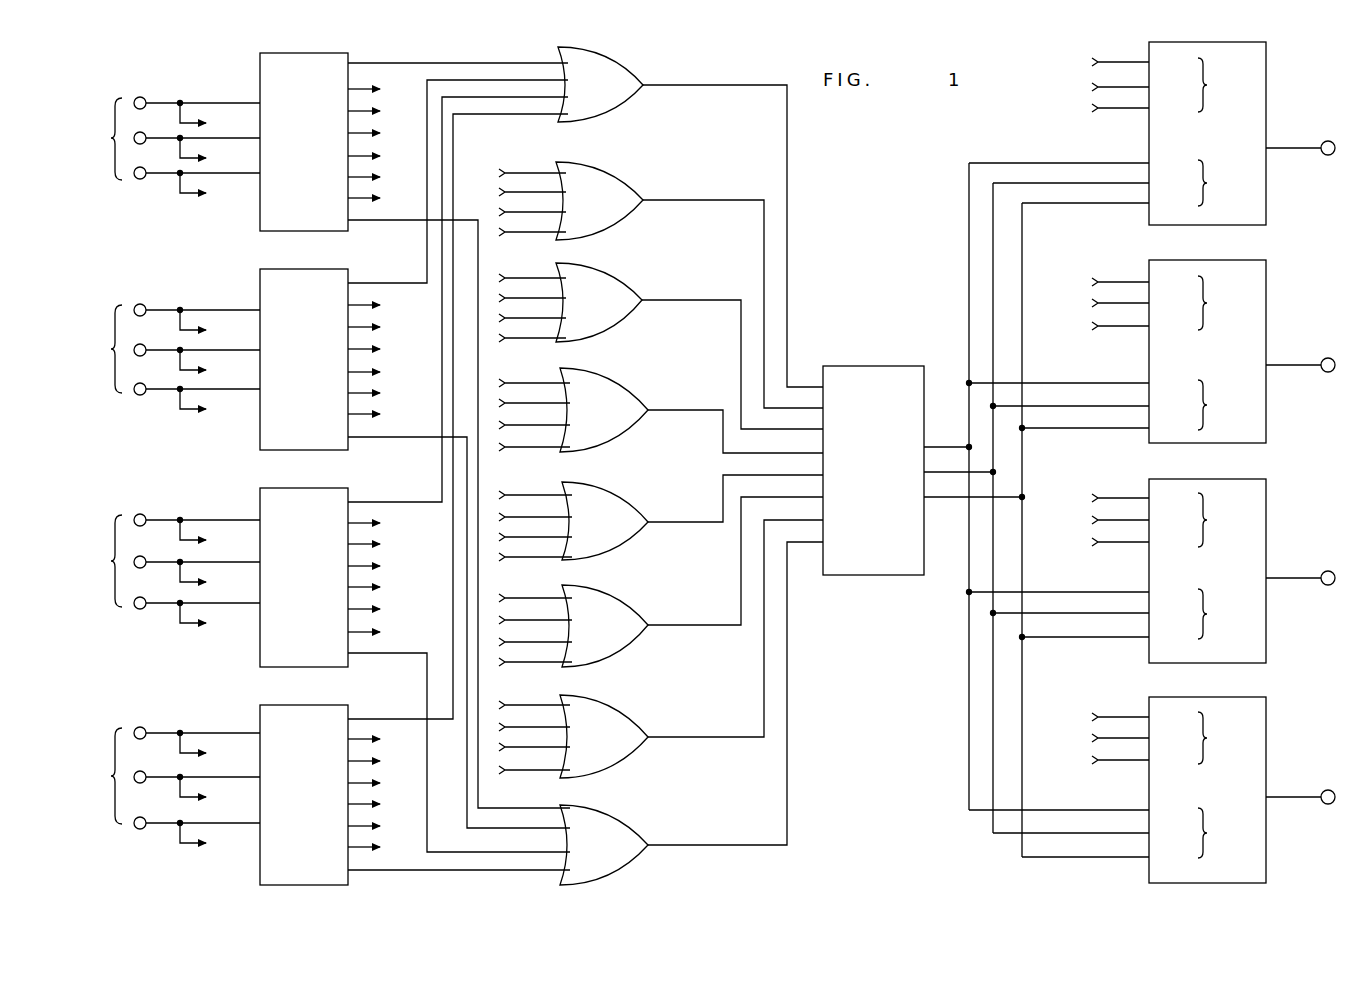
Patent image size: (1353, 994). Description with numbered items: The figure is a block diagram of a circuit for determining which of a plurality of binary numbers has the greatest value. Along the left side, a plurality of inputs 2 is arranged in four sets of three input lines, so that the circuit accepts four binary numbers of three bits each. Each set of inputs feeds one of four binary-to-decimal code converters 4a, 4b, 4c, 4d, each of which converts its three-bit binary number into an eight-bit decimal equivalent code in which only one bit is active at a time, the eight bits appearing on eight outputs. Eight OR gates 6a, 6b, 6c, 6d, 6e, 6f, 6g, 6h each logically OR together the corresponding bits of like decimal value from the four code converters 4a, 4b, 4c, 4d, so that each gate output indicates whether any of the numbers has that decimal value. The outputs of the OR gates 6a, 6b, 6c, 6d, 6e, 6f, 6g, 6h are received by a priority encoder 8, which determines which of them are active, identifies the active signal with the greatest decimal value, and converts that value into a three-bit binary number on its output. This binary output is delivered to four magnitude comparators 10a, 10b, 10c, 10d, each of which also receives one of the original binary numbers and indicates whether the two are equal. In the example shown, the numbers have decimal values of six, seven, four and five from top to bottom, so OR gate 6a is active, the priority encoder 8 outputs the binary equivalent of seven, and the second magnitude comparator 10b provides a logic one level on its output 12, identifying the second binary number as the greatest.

The inputs 2 is at (140, 97).
The binary-to-decimal code converter 4a is at (298, 53).
The binary-to-decimal code converter 4b is at (298, 269).
The binary-to-decimal code converter 4c is at (298, 488).
The binary-to-decimal code converter 4d is at (300, 705).
The OR gate 6a is at (630, 70).
The OR gate 6b is at (630, 164).
The OR gate 6c is at (634, 281).
The OR gate 6d is at (636, 384).
The OR gate 6e is at (634, 497).
The OR gate 6f is at (638, 599).
The OR gate 6g is at (630, 708).
The OR gate 6h is at (641, 819).
The priority encoder 8 is at (880, 366).
The magnitude comparator 10a is at (1266, 50).
The magnitude comparator 10b is at (1266, 268).
The magnitude comparator 10c is at (1266, 487).
The magnitude comparator 10d is at (1266, 705).
The output 12 is at (1328, 141).